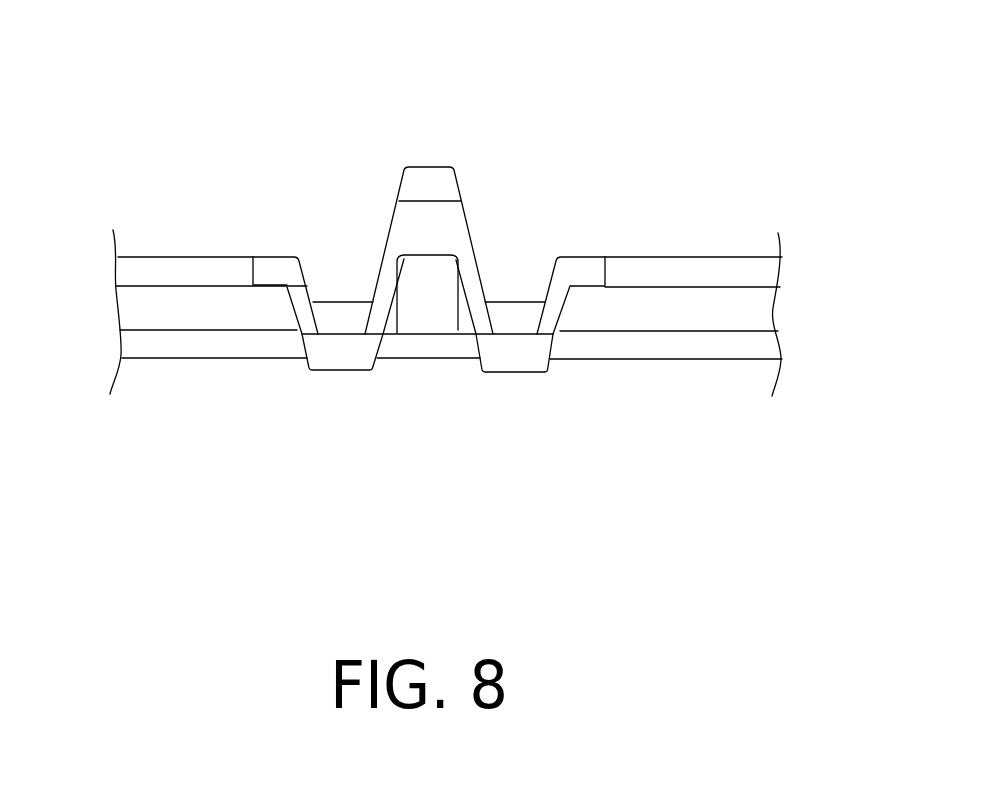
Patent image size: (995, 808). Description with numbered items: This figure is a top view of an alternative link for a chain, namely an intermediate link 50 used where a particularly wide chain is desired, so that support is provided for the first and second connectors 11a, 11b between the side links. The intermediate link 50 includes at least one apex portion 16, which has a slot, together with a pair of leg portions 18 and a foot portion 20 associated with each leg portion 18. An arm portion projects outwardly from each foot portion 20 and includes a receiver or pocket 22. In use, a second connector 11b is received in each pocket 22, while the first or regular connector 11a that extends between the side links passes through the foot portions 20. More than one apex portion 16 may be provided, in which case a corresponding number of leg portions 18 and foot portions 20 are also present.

The first connector 11a is at (600, 347).
The second connector 11b is at (153, 268).
The apex portion 16 is at (437, 177).
The leg portions 18 is at (393, 275).
The foot portion 20 is at (348, 355).
The pocket 22 is at (232, 259).
The intermediate link 50 is at (378, 162).